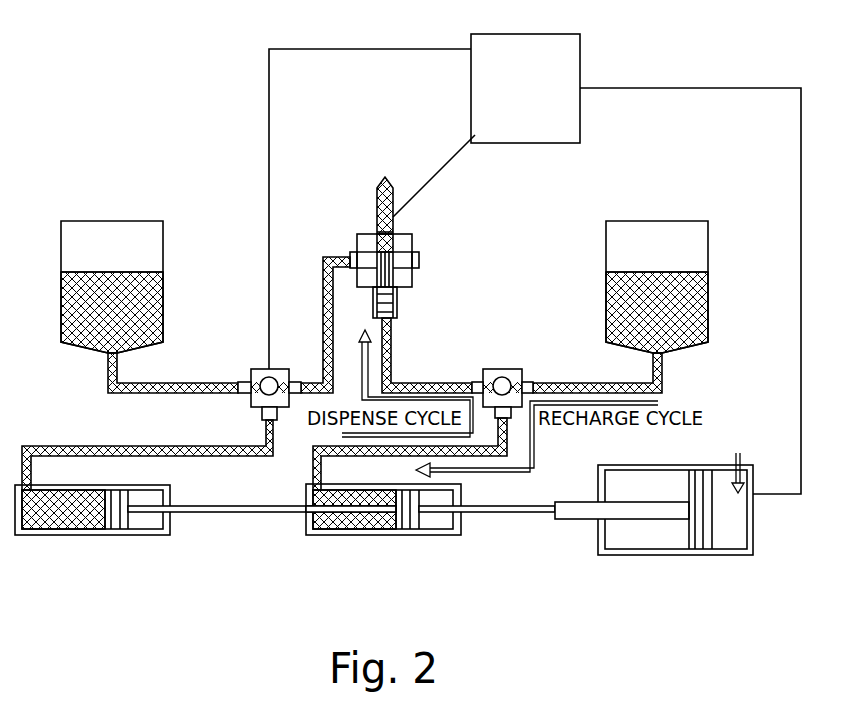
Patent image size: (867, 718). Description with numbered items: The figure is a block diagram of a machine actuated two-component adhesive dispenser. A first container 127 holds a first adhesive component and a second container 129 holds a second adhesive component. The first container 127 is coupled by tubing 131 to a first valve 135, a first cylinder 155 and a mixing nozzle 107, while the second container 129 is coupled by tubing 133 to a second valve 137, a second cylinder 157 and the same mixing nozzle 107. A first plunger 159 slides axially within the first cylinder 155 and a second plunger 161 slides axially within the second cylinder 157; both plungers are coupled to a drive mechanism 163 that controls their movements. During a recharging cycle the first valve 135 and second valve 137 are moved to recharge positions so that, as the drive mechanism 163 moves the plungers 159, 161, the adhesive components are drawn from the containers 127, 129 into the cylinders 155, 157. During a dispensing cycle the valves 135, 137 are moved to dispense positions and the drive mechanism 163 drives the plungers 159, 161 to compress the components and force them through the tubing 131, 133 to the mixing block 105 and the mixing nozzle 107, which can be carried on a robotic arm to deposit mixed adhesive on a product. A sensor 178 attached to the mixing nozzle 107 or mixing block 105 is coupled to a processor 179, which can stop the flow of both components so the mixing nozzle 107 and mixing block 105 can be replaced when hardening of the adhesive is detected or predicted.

The mixing block 105 is at (400, 275).
The mixing nozzle 107 is at (382, 188).
The first container 127 is at (138, 298).
The second container 129 is at (695, 308).
The tubing 131 is at (321, 318).
The tubing 133 is at (443, 382).
The first valve 135 is at (255, 372).
The second valve 137 is at (513, 377).
The first cylinder 155 is at (73, 520).
The second cylinder 157 is at (358, 520).
The first plunger 159 is at (115, 518).
The second plunger 161 is at (407, 517).
The drive mechanism 163 is at (636, 537).
The sensor 178 is at (377, 232).
The processor 179 is at (580, 68).